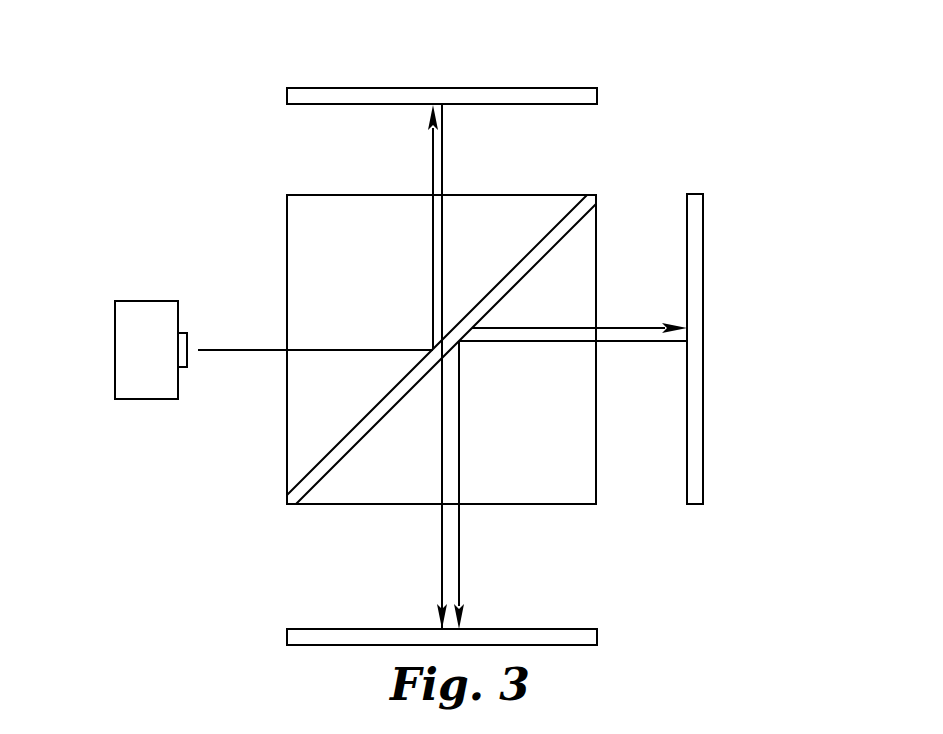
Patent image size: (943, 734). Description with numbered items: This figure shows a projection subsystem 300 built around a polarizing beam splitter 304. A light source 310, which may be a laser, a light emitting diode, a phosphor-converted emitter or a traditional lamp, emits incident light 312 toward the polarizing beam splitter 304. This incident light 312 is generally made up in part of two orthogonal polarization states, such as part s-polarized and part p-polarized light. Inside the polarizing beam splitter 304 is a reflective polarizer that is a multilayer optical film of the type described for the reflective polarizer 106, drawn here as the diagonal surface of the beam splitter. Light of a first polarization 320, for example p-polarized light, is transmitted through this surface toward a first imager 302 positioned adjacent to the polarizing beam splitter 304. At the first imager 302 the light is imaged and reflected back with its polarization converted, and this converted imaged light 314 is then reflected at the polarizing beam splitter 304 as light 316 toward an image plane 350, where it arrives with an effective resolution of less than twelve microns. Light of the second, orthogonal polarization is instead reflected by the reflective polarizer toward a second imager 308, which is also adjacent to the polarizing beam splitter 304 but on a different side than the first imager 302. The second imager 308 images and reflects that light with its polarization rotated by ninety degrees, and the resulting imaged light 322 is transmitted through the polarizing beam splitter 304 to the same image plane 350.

The projection subsystem 300 is at (706, 93).
The first imager 302 is at (695, 231).
The polarizing beam splitter 304 is at (300, 228).
The reflective polarizer 106 is at (591, 200).
The second imager 308 is at (518, 95).
The light source 310 is at (126, 347).
The incident light 312 is at (235, 352).
The converted imaged light 314 is at (527, 344).
The reflected imaged light 316 is at (460, 473).
The light of the first polarization 320 is at (551, 327).
The imaged light 322 is at (443, 236).
The image plane 350 is at (516, 636).